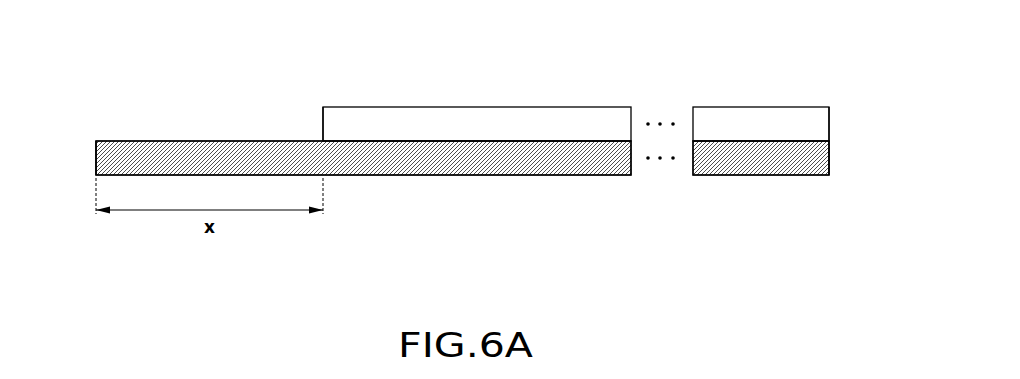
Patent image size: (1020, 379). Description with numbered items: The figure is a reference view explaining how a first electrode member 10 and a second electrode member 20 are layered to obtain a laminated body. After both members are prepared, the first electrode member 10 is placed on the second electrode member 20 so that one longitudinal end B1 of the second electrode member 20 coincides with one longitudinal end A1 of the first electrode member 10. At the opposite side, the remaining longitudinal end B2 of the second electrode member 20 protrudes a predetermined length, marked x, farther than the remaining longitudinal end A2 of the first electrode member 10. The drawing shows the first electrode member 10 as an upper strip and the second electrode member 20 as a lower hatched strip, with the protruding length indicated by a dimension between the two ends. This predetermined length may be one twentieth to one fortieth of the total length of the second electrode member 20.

The first electrode member 10 is at (472, 107).
The second electrode member 20 is at (192, 141).
The remaining longitudinal end of the first electrode member A2 is at (326, 103).
The one longitudinal end of the first electrode member A1 is at (834, 103).
The remaining longitudinal end of the second electrode member B2 is at (91, 180).
The one longitudinal end of the second electrode member B1 is at (834, 180).